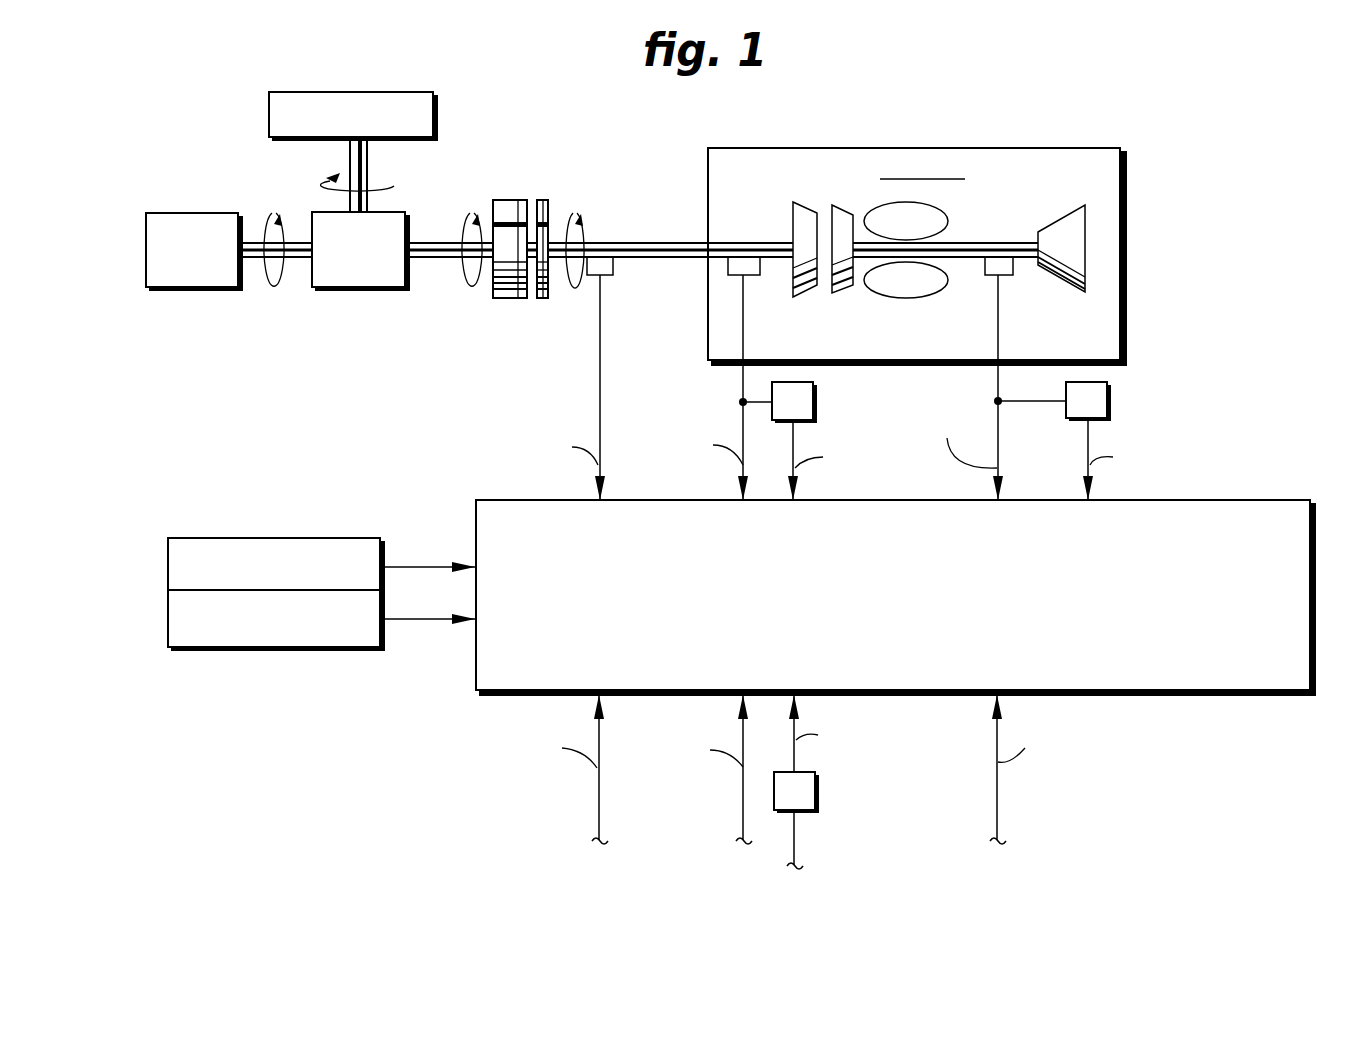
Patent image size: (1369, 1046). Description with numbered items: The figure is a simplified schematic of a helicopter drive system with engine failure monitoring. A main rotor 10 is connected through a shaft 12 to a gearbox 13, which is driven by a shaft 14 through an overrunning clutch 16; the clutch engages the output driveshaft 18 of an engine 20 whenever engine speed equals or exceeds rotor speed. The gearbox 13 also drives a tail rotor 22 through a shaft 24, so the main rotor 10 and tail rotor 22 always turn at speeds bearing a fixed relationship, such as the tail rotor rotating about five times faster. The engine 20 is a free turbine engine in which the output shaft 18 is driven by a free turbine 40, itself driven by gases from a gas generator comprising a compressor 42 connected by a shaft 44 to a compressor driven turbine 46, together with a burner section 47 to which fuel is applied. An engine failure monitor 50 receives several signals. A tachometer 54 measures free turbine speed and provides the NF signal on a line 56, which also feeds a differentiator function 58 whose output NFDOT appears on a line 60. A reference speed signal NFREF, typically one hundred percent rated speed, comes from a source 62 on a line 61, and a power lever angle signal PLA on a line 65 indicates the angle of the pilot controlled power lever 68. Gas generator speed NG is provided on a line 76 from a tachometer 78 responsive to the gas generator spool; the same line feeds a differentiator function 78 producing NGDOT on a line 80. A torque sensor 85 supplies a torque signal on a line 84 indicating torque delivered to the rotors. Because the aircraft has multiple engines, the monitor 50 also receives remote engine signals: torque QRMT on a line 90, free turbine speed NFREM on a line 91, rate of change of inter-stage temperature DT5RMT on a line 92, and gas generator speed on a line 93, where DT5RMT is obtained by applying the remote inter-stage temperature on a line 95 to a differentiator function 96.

The main rotor 10 is at (290, 92).
The shaft 12 is at (367, 158).
The gearbox 13 is at (375, 277).
The shaft 14 is at (417, 242).
The overrunning clutch 16 is at (503, 200).
The output driveshaft 18 is at (660, 248).
The engine 20 is at (917, 222).
The tail rotor 22 is at (208, 213).
The shaft 24 is at (250, 233).
The free turbine 40 is at (808, 210).
The compressor 42 is at (1075, 212).
The shaft 44 is at (963, 243).
The compressor driven turbine 46 is at (853, 287).
The burner section 47 is at (930, 292).
The engine failure monitor 50 is at (896, 563).
The tachometer 54 is at (750, 267).
The line 56 is at (742, 378).
The differentiator function 58 is at (815, 398).
The line 60 is at (795, 433).
The line 61 is at (402, 565).
The source 62 is at (273, 538).
The line 65 is at (397, 623).
The power lever 68 is at (275, 650).
The line 76 is at (1000, 385).
The tachometer / differentiator function 78 is at (1003, 267).
The line 80 is at (1087, 435).
The line 84 is at (600, 380).
The torque sensor 85 is at (610, 268).
The line 90 is at (598, 818).
The line 91 is at (743, 812).
The line 92 is at (796, 760).
The line 93 is at (998, 823).
The line 95 is at (797, 852).
The differentiator function 96 is at (817, 787).